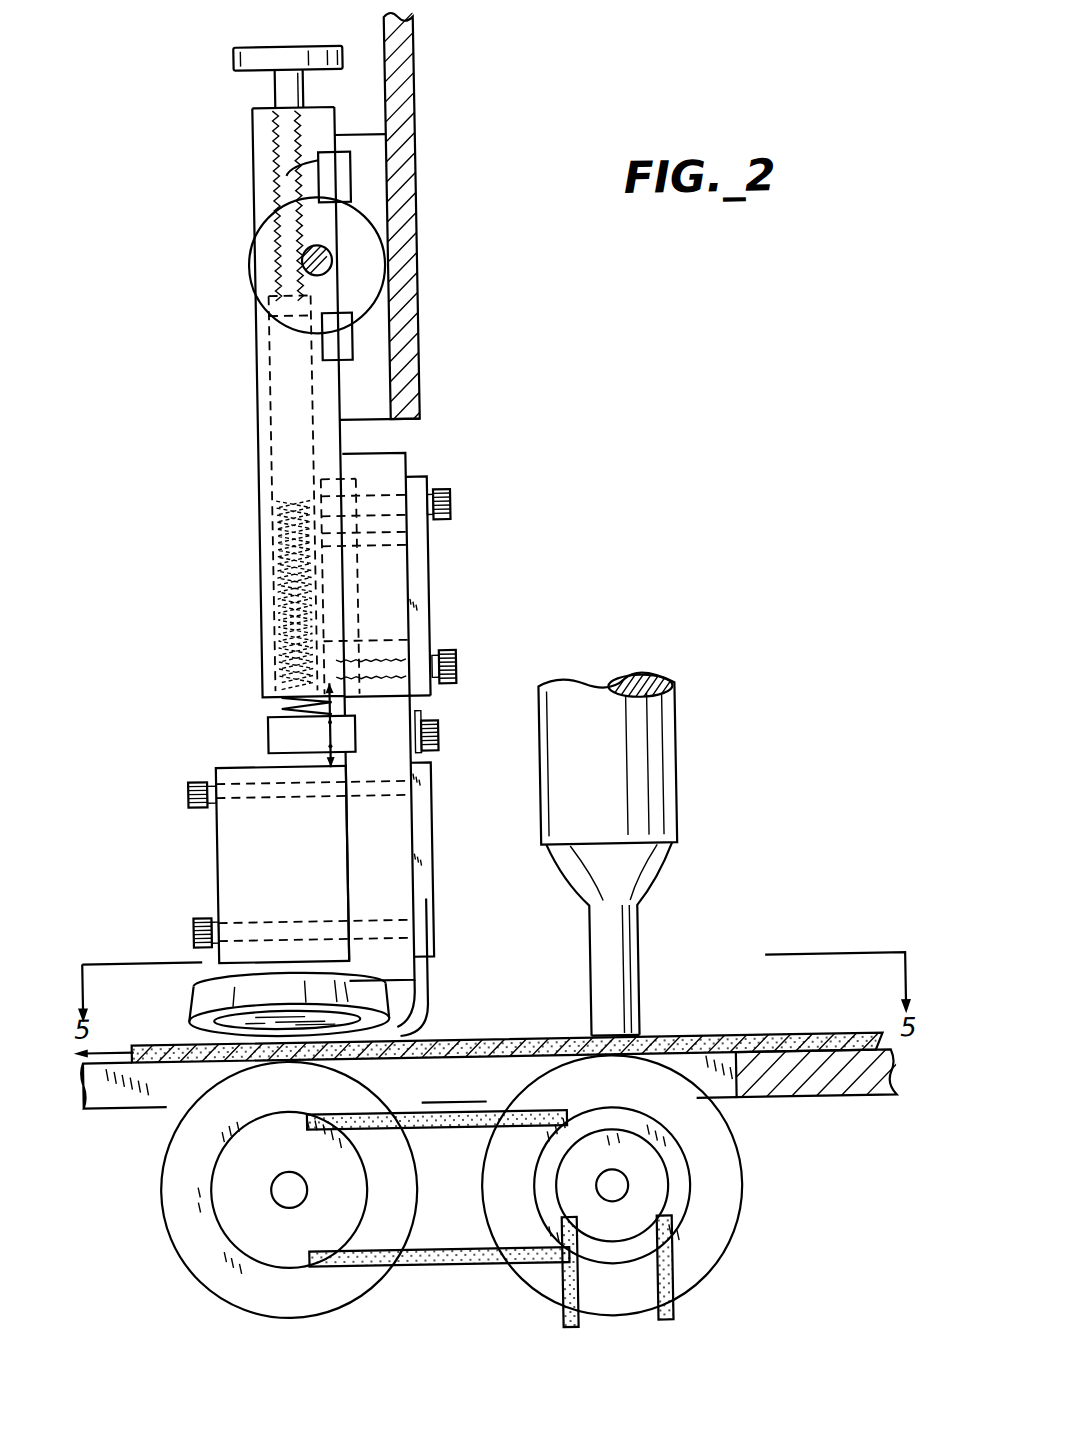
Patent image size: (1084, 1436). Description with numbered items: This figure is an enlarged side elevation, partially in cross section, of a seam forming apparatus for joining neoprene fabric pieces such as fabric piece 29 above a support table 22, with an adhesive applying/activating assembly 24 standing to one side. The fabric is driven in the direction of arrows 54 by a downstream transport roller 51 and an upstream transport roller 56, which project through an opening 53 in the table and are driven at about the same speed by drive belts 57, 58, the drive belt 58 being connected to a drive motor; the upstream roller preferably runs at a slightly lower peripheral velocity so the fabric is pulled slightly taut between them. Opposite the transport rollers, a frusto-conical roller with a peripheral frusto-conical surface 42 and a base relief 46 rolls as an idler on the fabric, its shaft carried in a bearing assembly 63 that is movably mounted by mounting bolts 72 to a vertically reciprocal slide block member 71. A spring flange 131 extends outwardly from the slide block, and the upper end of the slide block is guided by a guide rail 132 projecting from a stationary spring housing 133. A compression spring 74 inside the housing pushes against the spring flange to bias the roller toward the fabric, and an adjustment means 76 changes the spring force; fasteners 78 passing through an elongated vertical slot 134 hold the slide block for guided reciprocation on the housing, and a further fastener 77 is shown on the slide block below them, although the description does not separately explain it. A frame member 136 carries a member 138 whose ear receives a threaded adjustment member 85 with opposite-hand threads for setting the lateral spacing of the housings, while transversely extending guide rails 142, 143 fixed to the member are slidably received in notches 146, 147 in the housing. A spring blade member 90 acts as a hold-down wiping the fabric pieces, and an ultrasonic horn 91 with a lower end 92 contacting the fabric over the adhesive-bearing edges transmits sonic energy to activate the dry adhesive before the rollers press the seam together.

The support table 22 is at (813, 1088).
The adhesive applying/activating assembly 24 is at (695, 855).
The fabric piece 29 is at (476, 1045).
The peripheral frusto-conical surface 42 is at (194, 1005).
The relief 46 is at (392, 1018).
The transport roller 51 is at (153, 1192).
The opening 53 is at (143, 1089).
The arrows 54 is at (113, 1044).
The upstream transport roller 56 is at (738, 1182).
The drive belt 57 is at (430, 1266).
The drive belt 58 is at (666, 1282).
The bearing assembly 63 is at (240, 823).
The slide block member 71 is at (383, 587).
The mounting bolts 72 is at (188, 788).
The compression spring 74 is at (283, 710).
The adjustment means 76 is at (283, 88).
The locking screw 77 is at (438, 722).
The fasteners 78 is at (452, 503).
The threaded adjustment member 85 is at (312, 266).
The spring blade member 90 is at (415, 992).
The ultrasonic horn 91 is at (676, 828).
The lower end 92 is at (628, 1046).
The spring flange 131 is at (268, 736).
The guide rail 132 is at (432, 544).
The spring housing 133 is at (266, 476).
The elongated vertical slot 134 is at (408, 470).
The frame member 136 is at (418, 242).
The member 138 is at (368, 128).
The guide rail 142 is at (362, 178).
The guide rail 143 is at (362, 338).
The notch 146 is at (362, 158).
The notch 147 is at (330, 345).